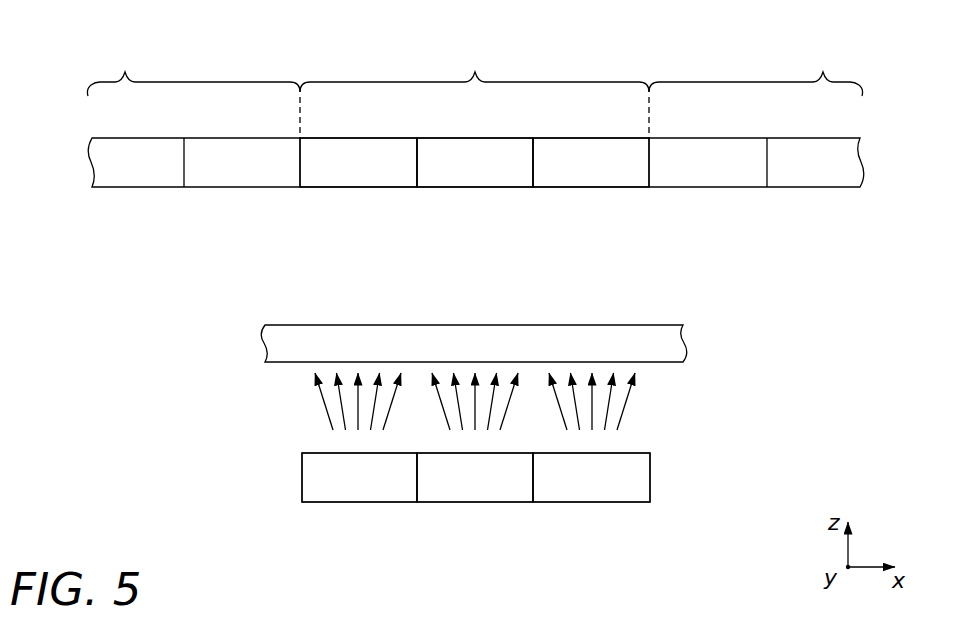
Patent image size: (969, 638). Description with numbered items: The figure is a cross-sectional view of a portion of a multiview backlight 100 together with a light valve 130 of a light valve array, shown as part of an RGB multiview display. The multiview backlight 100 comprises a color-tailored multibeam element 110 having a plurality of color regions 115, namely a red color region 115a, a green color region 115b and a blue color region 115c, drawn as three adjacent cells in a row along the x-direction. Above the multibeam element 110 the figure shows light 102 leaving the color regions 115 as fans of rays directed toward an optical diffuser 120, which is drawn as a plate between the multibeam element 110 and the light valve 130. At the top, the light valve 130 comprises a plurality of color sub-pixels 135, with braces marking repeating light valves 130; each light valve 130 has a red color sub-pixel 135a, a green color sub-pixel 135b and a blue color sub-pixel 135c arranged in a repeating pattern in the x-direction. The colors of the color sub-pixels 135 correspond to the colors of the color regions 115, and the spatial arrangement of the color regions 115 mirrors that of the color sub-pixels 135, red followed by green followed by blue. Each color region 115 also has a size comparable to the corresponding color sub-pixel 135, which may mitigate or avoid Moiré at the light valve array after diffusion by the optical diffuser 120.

The multiview backlight 100 is at (148, 268).
The light emitted from light source 102 is at (288, 397).
The color-tailored multibeam element 110 is at (474, 479).
The color regions 115 is at (474, 519).
The red color region 115a is at (302, 476).
The green color region 115b is at (475, 503).
The blue color region 115c is at (650, 478).
The optical diffuser 120 is at (667, 313).
The light valve 130 is at (474, 87).
The color sub-pixels 135 is at (505, 204).
The red color sub-pixel 135a is at (358, 188).
The green color sub-pixel 135b is at (475, 188).
The blue color sub-pixel 135c is at (592, 188).